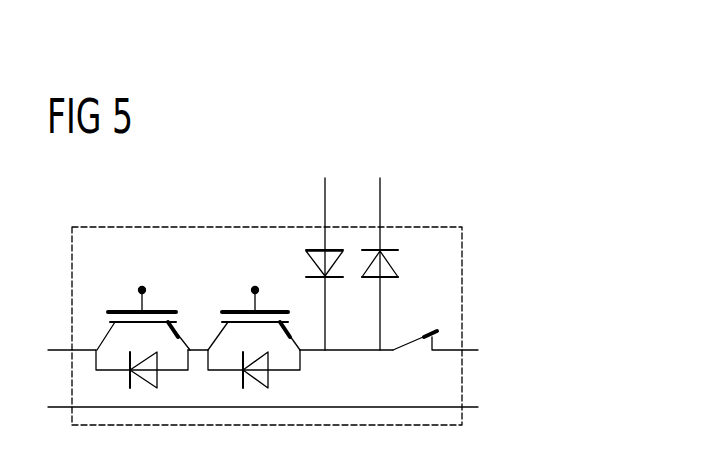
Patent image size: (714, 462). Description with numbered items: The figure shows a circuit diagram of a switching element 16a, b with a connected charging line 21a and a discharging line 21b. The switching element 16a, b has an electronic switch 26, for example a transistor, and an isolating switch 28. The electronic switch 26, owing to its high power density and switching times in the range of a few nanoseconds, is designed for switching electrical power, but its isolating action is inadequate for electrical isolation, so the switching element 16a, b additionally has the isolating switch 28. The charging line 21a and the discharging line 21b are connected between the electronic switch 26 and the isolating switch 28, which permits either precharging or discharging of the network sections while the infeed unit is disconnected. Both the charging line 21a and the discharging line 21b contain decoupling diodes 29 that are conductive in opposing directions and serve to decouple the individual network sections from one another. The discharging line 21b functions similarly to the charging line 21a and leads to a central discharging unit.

The switching element 16a, b is at (525, 233).
The electronic switch 26 is at (190, 315).
The decoupling diode 29 is at (313, 266).
The charging line 21a is at (325, 197).
The discharging line 21b is at (383, 196).
The isolating switch 28 is at (420, 335).